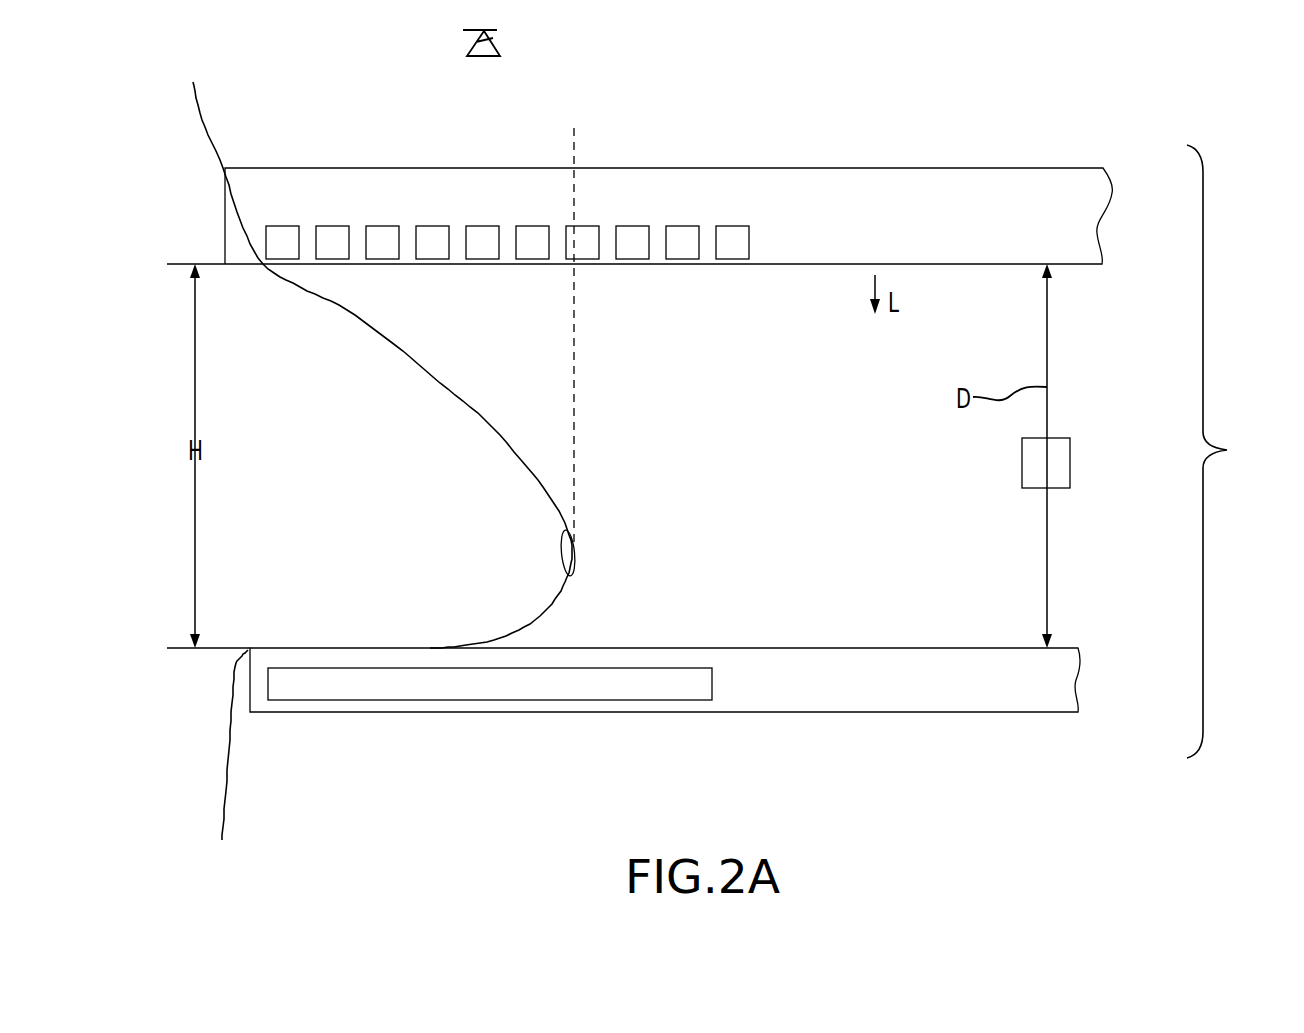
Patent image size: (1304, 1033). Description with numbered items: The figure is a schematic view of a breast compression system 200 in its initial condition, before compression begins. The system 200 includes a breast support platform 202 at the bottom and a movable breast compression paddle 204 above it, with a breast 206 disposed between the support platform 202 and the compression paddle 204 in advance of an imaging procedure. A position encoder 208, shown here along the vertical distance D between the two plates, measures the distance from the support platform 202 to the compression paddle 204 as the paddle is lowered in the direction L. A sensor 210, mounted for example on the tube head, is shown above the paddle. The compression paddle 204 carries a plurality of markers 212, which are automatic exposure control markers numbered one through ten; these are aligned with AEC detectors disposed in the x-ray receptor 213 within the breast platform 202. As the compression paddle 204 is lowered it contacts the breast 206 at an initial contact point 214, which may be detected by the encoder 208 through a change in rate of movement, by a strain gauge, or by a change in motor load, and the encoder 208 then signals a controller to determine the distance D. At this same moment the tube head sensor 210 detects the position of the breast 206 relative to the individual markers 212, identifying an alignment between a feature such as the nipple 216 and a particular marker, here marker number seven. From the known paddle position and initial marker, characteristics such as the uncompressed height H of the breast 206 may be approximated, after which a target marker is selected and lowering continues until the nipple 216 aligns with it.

The breast compression system 200 is at (1230, 451).
The breast support platform 202 is at (923, 695).
The breast compression paddle 204 is at (958, 184).
The breast 206 is at (356, 521).
The position encoder 208 is at (1062, 467).
The sensor 210 is at (497, 38).
The markers 212 is at (632, 197).
The x-ray receptor 213 is at (573, 688).
The initial contact point 214 is at (256, 276).
The nipple 216 is at (588, 549).